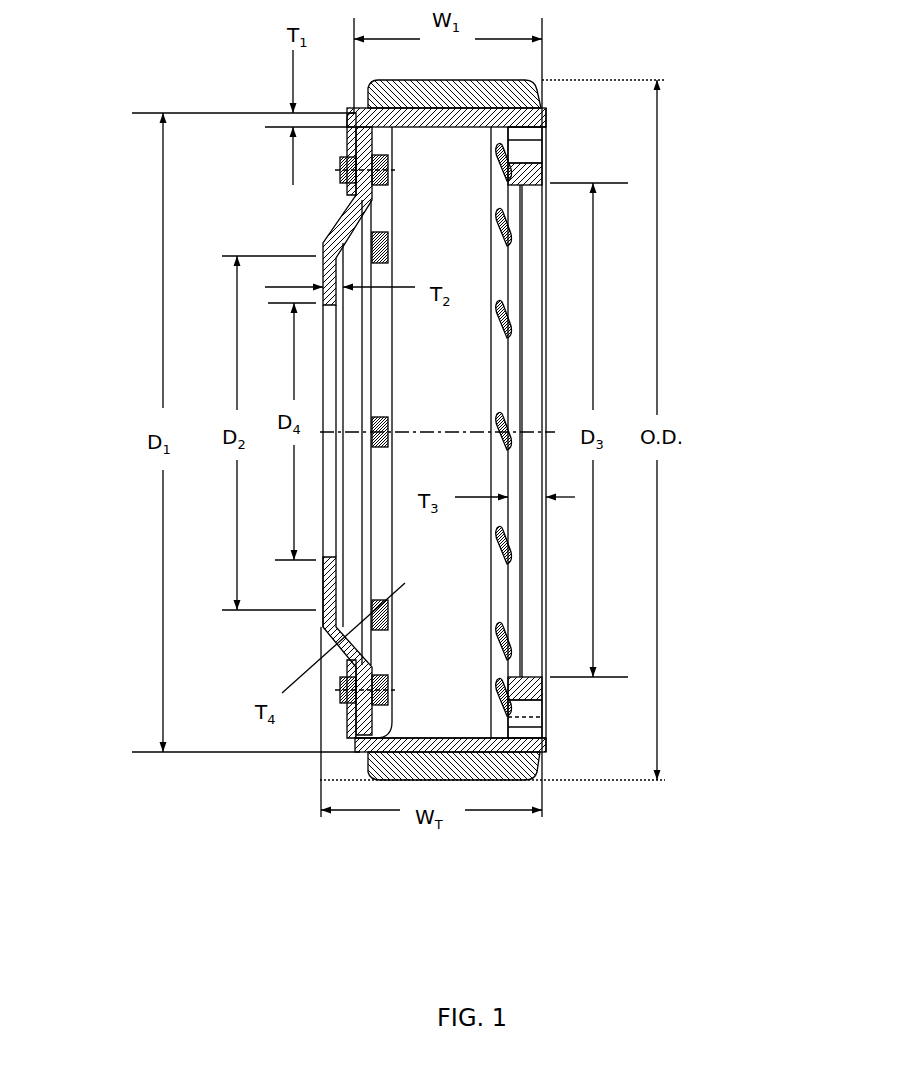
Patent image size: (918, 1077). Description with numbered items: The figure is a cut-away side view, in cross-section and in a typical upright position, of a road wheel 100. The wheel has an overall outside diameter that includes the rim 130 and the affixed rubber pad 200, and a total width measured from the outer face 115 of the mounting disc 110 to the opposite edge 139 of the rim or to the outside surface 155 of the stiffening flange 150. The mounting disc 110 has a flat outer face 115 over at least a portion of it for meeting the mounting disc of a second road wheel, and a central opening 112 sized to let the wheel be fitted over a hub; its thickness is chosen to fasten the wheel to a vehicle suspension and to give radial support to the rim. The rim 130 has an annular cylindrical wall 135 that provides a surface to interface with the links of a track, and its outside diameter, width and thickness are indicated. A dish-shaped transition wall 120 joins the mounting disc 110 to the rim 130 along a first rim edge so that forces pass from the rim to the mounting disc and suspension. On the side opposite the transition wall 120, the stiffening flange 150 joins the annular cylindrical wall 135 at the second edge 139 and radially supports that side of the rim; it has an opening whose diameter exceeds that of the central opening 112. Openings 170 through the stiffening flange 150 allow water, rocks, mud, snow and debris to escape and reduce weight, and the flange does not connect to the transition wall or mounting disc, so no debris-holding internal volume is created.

The road wheel 100 is at (237, 98).
The mounting disc 110 is at (345, 580).
The central opening 112 is at (333, 377).
The outer face 115 is at (318, 585).
The transition wall 120 is at (320, 250).
The rim 130 is at (452, 127).
The annular cylindrical wall 135 is at (503, 752).
The second edge 139 is at (545, 112).
The stiffening flange 150 is at (527, 686).
The outside surface 155 is at (548, 685).
The openings 170 is at (545, 133).
The rubber pad 200 is at (378, 778).